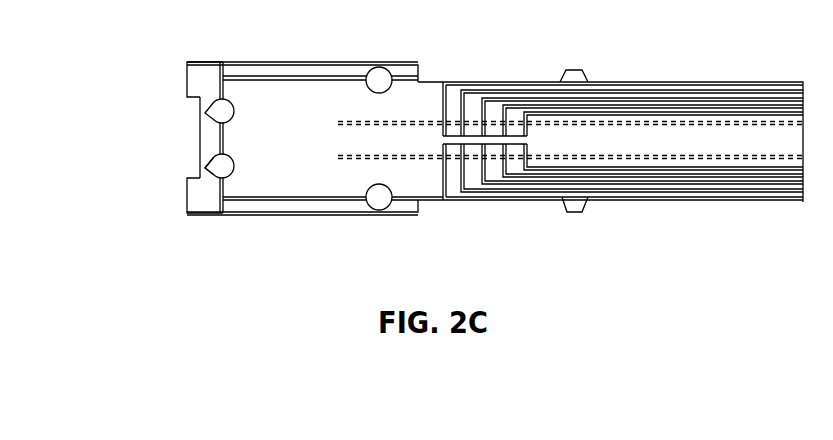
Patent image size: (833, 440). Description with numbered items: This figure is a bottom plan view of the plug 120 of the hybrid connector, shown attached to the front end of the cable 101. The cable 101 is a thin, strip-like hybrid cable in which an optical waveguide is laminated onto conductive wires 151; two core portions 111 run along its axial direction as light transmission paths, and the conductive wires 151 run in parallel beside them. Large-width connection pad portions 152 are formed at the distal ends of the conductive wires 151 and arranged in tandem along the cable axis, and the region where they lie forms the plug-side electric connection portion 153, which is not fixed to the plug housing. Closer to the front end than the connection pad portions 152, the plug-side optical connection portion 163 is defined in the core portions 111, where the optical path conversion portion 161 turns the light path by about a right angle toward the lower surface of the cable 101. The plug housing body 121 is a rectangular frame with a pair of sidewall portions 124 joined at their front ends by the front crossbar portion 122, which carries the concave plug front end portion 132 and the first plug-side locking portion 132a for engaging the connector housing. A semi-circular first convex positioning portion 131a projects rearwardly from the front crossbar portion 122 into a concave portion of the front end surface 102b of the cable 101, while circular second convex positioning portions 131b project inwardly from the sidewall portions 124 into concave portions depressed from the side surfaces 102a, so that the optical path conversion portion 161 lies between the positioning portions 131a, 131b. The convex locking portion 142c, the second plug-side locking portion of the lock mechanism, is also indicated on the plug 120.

The plug 120 is at (690, 38).
The front crossbar portion 122 is at (208, 62).
The plug housing body 121 is at (207, 214).
The concave plug front end portion 132 is at (192, 110).
The first plug-side locking portion 132a is at (198, 137).
The first convex positioning portion 131a is at (203, 165).
The second convex positioning portion 131b is at (375, 212).
The side surface of the cable 102a is at (240, 196).
The front end surface 102b is at (227, 103).
The plug-side optical connection portion 163 is at (312, 61).
The optical path conversion portion 161 is at (345, 203).
The sidewall portion 124 is at (295, 216).
The core portion 111 is at (403, 120).
The connection pad portion 152 is at (452, 105).
The conductive wire 151 is at (498, 82).
The plug-side electric connection portion 153 is at (537, 204).
The convex locking portion 142c is at (572, 69).
The cable 101 is at (720, 82).